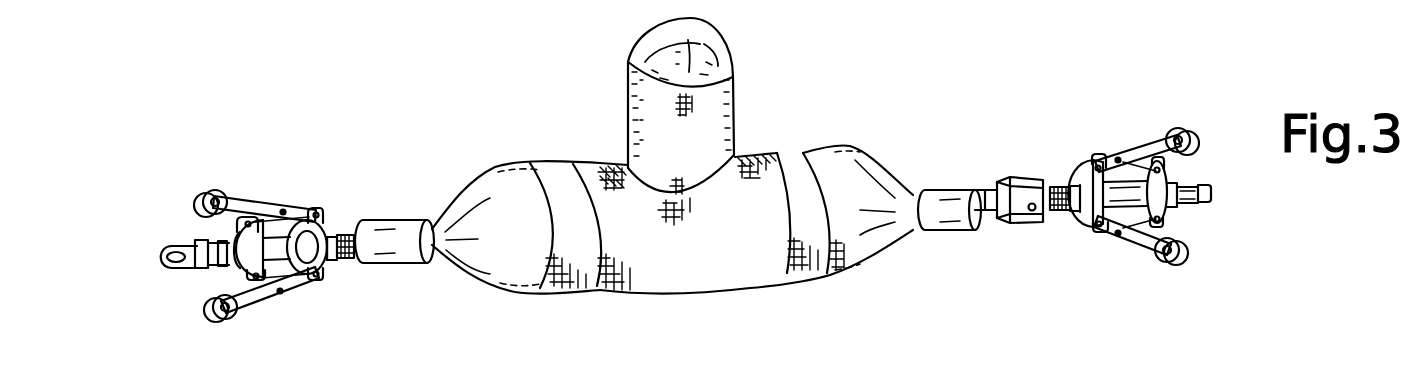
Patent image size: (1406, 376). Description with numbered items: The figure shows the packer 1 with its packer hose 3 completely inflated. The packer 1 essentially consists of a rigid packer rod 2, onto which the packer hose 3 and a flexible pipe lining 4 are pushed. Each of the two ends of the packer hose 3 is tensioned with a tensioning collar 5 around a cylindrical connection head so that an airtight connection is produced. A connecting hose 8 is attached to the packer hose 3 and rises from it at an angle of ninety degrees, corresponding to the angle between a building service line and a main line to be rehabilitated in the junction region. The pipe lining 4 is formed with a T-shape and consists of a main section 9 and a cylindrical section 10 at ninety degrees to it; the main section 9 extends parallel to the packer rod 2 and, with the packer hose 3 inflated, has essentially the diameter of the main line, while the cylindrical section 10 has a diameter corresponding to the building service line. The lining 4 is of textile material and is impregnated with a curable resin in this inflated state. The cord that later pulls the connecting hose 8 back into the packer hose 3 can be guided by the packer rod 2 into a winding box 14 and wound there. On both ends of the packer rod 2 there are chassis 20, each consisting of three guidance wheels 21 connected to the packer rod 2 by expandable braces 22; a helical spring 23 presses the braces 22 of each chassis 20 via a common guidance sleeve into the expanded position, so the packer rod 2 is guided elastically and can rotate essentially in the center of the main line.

The packer 1 is at (591, 137).
The packer rod 2 is at (978, 196).
The packer hose 3 is at (508, 258).
The pipe lining 4 is at (683, 243).
The tensioning collar 5 is at (396, 233).
The connecting hose 8 is at (662, 30).
The main section 9 is at (748, 235).
The cylindrical section 10 is at (630, 107).
The winding box 14 is at (1000, 226).
The chassis 20 is at (243, 199).
The guidance wheels 21 is at (207, 195).
The expandable braces 22 is at (293, 206).
The helical spring 23 is at (341, 258).